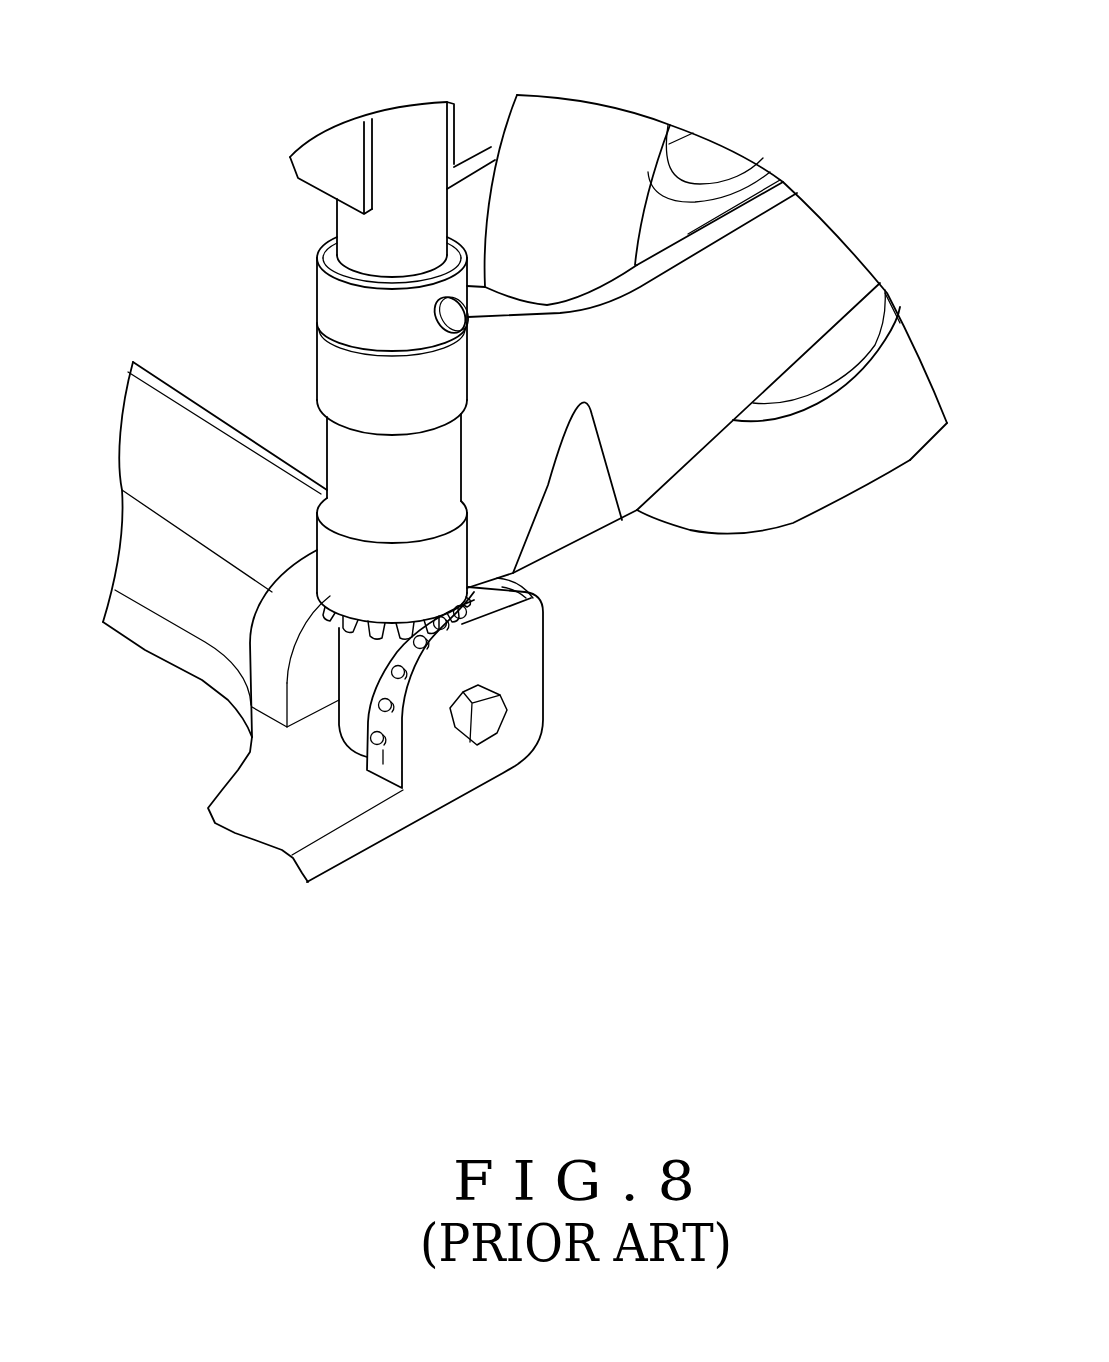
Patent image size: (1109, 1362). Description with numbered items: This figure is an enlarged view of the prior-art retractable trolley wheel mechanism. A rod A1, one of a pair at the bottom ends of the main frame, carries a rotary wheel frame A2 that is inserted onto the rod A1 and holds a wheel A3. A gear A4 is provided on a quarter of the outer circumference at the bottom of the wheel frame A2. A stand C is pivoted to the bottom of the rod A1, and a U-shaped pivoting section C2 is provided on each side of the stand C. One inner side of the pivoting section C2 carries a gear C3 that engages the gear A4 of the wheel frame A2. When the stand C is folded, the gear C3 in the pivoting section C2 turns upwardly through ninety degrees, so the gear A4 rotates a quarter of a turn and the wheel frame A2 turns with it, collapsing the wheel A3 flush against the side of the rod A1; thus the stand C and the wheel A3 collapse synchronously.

The rod A1 is at (404, 155).
The rotary wheel frame A2 is at (410, 465).
The wheel A3 is at (813, 473).
The gear A4 is at (366, 620).
The stand C is at (168, 580).
The U-shaped pivoting section C2 is at (503, 650).
The gear C3 is at (378, 744).